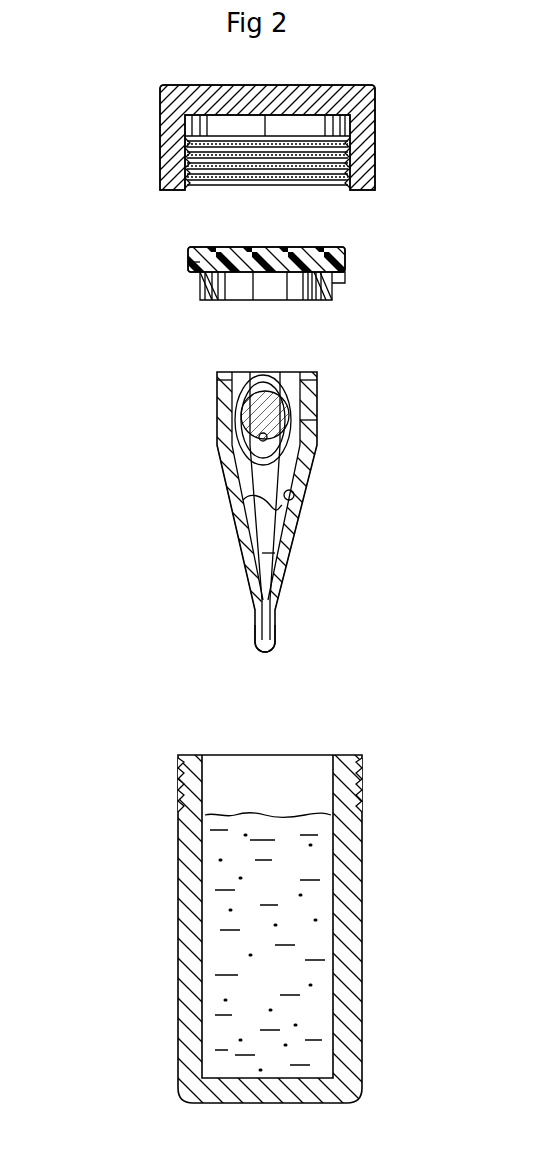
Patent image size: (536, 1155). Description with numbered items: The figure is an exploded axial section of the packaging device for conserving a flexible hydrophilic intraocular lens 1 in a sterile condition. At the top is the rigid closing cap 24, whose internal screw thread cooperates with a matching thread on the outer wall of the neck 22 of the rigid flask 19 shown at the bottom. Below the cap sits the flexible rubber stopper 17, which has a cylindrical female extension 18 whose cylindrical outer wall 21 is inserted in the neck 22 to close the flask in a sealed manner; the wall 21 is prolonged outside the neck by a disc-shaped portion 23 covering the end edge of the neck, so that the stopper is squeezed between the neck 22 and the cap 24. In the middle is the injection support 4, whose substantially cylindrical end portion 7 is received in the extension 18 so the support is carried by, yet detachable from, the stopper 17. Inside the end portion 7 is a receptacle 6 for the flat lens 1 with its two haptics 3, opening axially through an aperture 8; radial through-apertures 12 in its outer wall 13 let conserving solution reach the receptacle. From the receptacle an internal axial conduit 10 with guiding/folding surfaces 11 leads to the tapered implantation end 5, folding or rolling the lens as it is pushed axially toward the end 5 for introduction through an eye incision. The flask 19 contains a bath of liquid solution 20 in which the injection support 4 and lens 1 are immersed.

The flexible hydrophilic intraocular lens 1 is at (248, 400).
The haptics 3 is at (253, 497).
The injection support 4 is at (214, 478).
The implantation end 5 is at (253, 623).
The receptacle 6 is at (317, 376).
The cylindrical end portion 7 is at (318, 420).
The aperture 8 is at (276, 362).
The internal axial conduit 10 is at (267, 553).
The guiding/folding surfaces 11 is at (283, 522).
The radial through-apertures 12 is at (259, 437).
The outer wall 13 is at (220, 385).
The flexible rubber stopper 17 is at (352, 259).
The cylindrical female extension 18 is at (322, 292).
The rigid flask 19 is at (177, 973).
The bath of liquid solution 20 is at (235, 915).
The cylindrical outer wall 21 is at (333, 282).
The neck 22 is at (178, 798).
The disc-shaped portion 23 is at (188, 262).
The rigid closing cap 24 is at (200, 90).